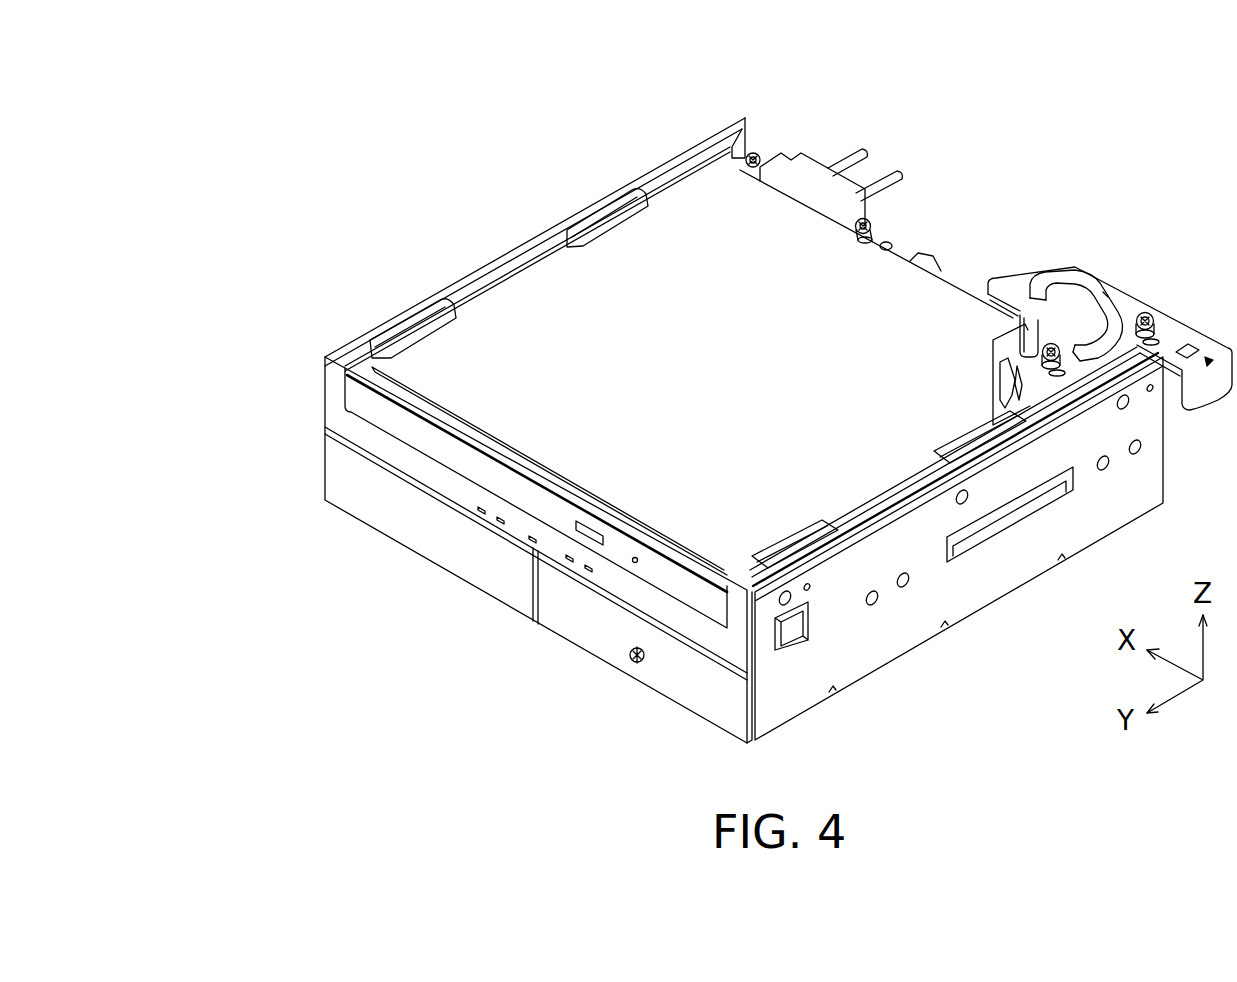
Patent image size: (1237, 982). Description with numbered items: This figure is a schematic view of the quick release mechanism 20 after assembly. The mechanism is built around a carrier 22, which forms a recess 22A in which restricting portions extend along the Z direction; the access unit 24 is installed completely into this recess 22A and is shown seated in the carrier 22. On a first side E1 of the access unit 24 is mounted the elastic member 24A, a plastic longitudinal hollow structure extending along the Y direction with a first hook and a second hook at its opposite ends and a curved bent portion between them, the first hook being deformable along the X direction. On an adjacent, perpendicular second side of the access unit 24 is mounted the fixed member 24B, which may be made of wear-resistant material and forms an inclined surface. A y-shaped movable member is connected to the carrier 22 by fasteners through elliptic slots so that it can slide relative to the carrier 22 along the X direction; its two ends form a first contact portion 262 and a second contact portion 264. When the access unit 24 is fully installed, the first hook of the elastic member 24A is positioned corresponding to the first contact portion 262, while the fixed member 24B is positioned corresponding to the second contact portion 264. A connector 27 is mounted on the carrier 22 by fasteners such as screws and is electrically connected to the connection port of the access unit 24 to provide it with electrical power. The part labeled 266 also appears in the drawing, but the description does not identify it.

The quick release mechanism 20 is at (362, 84).
The carrier 22 is at (377, 323).
The recess 22A is at (343, 387).
The access unit 24 is at (530, 305).
The elastic member 24A is at (1017, 348).
The fixed member 24B is at (920, 263).
The connector 27 is at (812, 180).
The first contact portion 262 is at (1073, 353).
The second contact portion 264 is at (1000, 365).
The screws 266 is at (1157, 307).
The first side E1 is at (1042, 363).